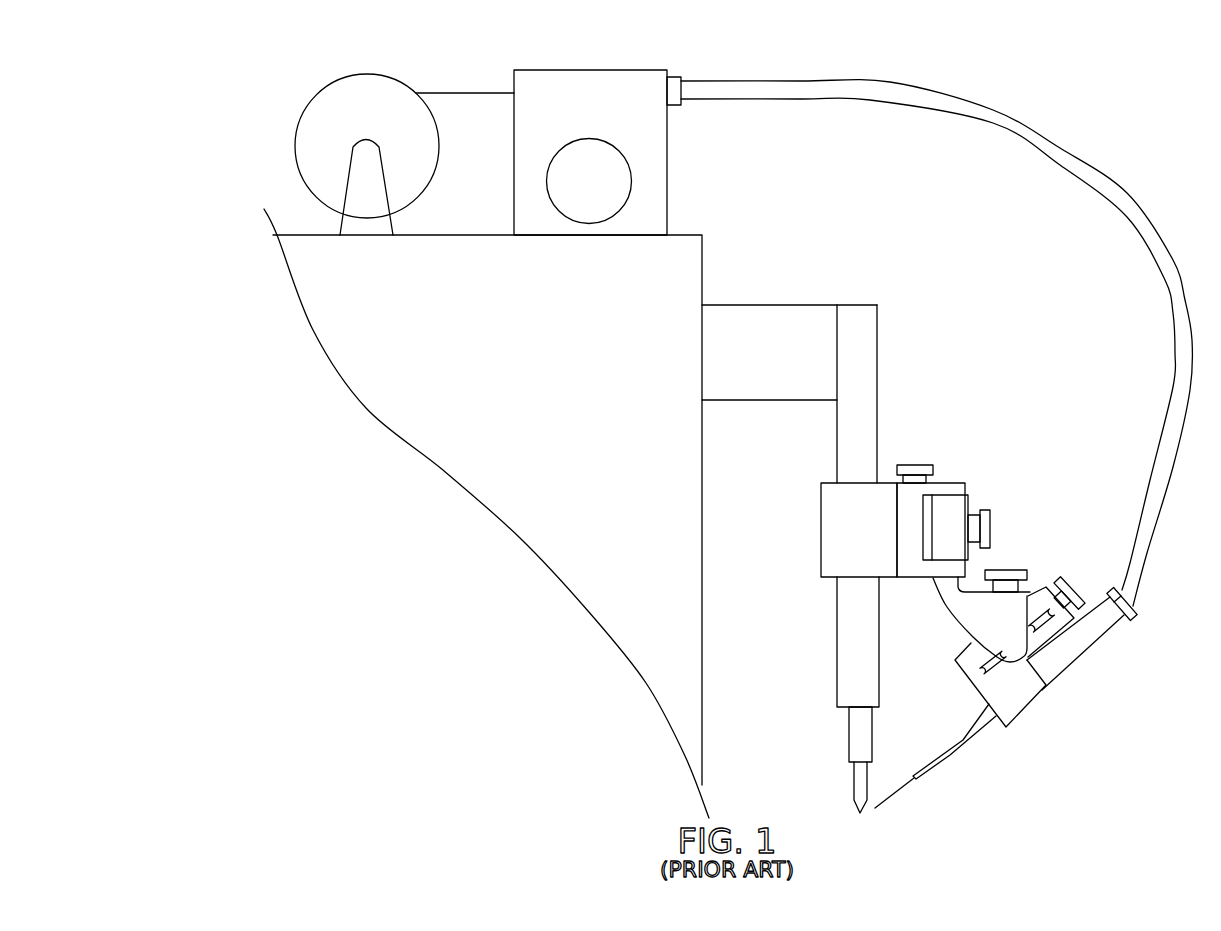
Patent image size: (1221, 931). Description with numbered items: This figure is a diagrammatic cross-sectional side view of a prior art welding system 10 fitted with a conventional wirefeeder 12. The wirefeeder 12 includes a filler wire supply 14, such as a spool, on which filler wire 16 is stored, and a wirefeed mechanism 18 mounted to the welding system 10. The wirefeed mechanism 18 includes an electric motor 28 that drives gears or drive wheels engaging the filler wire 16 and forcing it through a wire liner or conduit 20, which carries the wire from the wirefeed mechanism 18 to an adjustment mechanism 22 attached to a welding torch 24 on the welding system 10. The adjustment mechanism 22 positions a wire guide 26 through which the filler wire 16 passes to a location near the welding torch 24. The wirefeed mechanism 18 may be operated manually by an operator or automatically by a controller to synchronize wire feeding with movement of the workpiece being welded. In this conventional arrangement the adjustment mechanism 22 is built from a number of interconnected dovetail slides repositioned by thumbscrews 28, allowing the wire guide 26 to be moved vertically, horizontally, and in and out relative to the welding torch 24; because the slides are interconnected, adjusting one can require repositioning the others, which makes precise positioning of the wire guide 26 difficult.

The welding system 10 is at (658, 274).
The wirefeeder 12 is at (1167, 153).
The filler wire supply 14 is at (356, 108).
The filler wire 16 is at (476, 95).
The wirefeed mechanism 18 is at (621, 98).
The wire liner or conduit 20 is at (1026, 127).
The adjustment mechanism 22 is at (1029, 499).
The welding torch 24 is at (848, 733).
The wire guide 26 is at (968, 748).
The electric motor 28 is at (578, 192).